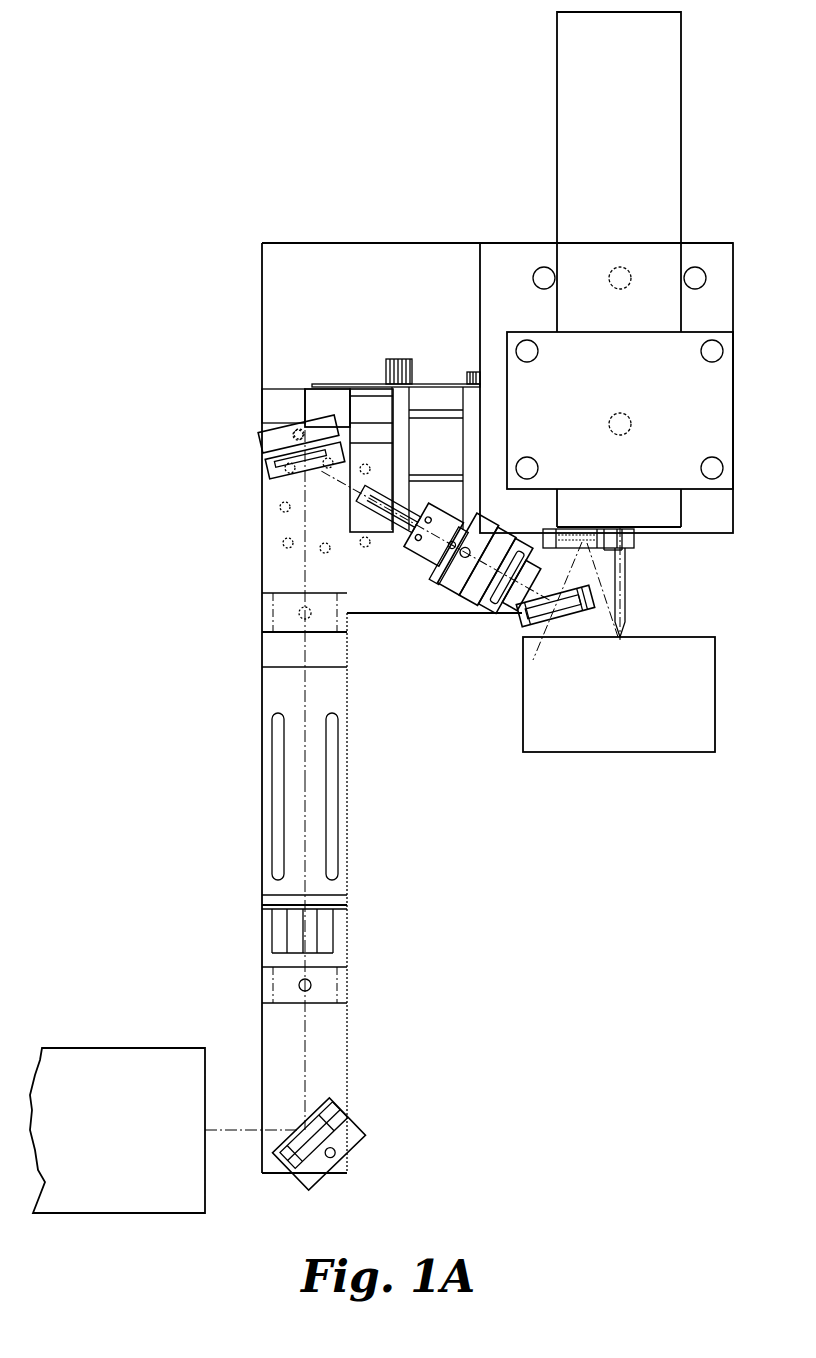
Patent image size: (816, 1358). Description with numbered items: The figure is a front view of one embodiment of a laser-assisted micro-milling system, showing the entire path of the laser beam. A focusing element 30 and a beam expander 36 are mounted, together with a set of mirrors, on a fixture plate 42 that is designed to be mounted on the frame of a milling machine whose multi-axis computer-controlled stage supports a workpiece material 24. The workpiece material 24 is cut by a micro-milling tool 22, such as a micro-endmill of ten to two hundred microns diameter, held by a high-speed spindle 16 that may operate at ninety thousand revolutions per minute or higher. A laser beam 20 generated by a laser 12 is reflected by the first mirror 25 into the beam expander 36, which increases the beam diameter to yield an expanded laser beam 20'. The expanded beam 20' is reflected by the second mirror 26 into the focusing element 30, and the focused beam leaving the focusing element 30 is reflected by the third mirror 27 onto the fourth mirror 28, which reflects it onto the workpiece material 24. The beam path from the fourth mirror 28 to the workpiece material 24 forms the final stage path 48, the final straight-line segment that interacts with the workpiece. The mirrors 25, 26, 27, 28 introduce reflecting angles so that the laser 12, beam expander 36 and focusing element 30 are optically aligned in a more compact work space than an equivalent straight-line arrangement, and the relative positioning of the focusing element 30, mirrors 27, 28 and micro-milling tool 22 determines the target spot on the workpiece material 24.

The laser 12 is at (92, 1070).
The high-speed spindle 16 is at (578, 112).
The laser beam 20 is at (349, 955).
The expanded laser beam 20' is at (258, 605).
The micro-milling tool 22 is at (627, 590).
The workpiece material 24 is at (660, 715).
The first mirror 25 is at (312, 1175).
The second mirror 26 is at (325, 427).
The third mirror 27 is at (532, 640).
The fourth mirror 28 is at (622, 560).
The focusing element 30 is at (443, 503).
The beam expander 36 is at (338, 738).
The fixture plate 42 is at (290, 275).
The final stage path 48 is at (600, 574).